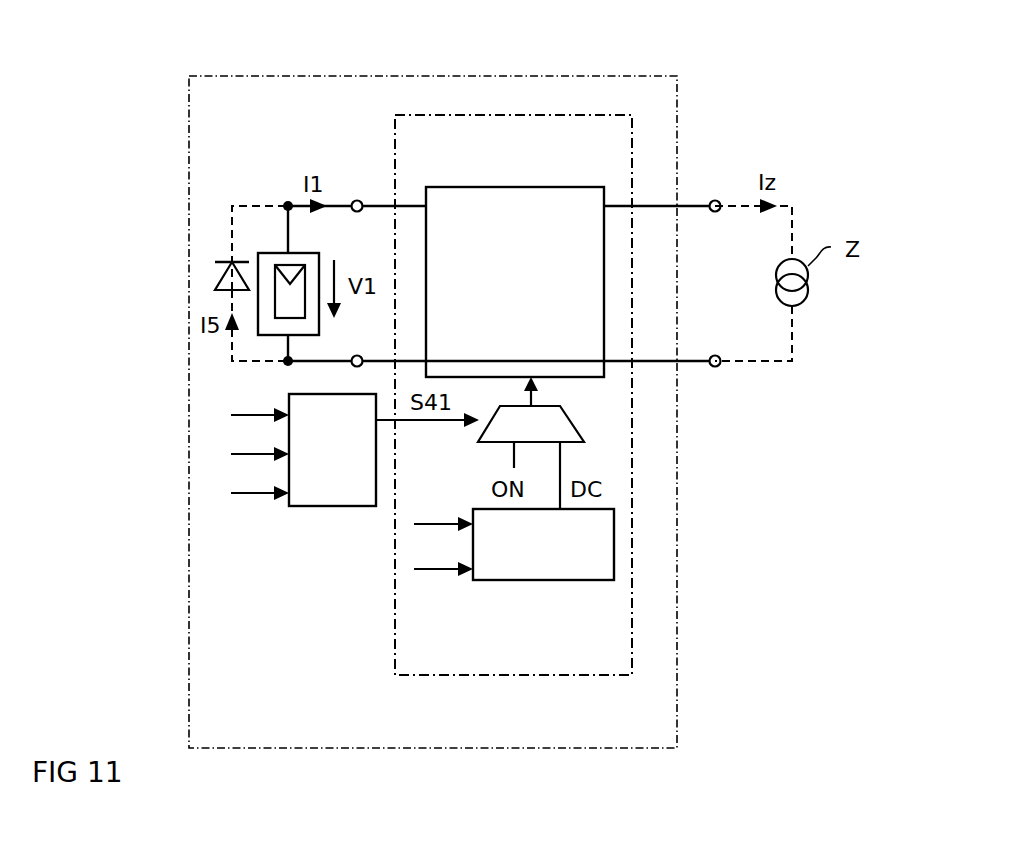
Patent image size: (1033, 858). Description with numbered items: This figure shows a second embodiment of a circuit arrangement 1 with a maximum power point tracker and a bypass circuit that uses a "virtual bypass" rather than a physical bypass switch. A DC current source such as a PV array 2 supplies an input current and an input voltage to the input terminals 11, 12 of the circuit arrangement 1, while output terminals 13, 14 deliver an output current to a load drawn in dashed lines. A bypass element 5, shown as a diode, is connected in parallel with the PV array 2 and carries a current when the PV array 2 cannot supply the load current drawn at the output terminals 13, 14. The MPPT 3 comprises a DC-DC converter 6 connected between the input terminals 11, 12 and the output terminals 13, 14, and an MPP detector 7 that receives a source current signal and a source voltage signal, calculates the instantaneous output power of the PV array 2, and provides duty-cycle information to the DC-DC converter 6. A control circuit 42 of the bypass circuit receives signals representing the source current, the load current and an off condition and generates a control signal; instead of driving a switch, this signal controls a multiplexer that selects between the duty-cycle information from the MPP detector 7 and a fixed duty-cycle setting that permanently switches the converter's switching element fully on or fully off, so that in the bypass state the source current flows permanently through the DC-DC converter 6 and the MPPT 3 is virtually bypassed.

The circuit arrangement 1 is at (180, 93).
The PV array 2 is at (281, 253).
The maximum power point tracker 3 is at (393, 130).
The bypass element 5 is at (228, 258).
The DC-DC converter 6 is at (507, 186).
The MPP detector 7 is at (540, 582).
The input terminal 11 is at (357, 199).
The input terminal 12 is at (357, 355).
The output terminal 13 is at (716, 199).
The output terminal 14 is at (716, 367).
The control circuit 42 is at (332, 508).